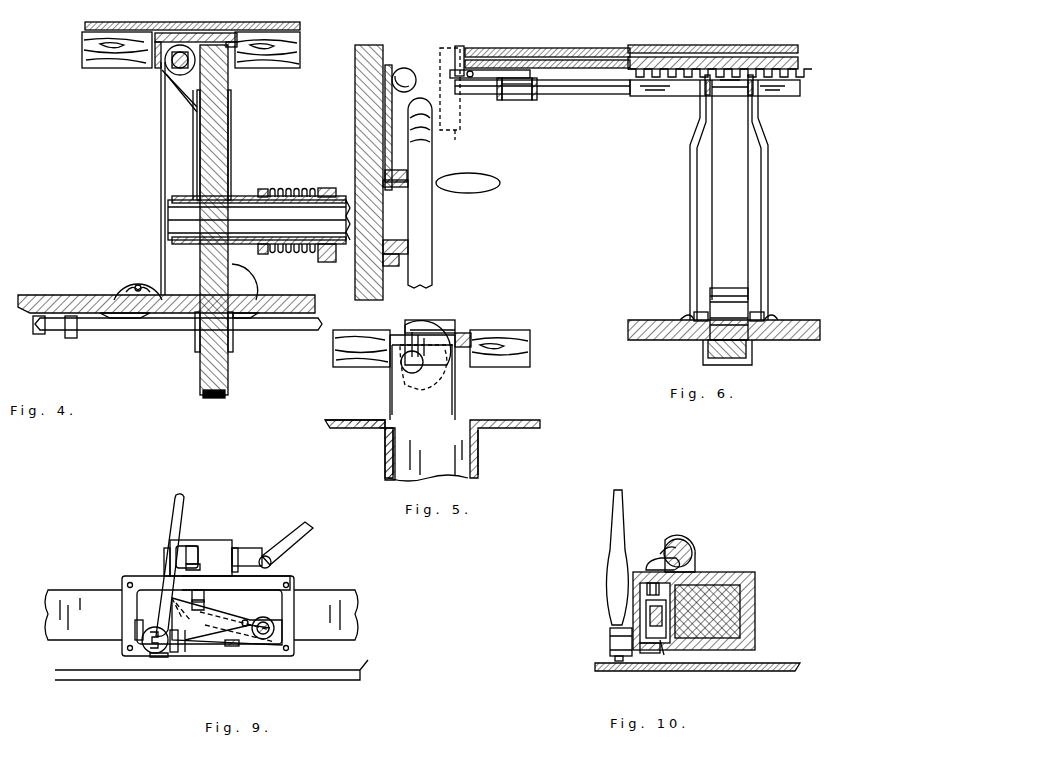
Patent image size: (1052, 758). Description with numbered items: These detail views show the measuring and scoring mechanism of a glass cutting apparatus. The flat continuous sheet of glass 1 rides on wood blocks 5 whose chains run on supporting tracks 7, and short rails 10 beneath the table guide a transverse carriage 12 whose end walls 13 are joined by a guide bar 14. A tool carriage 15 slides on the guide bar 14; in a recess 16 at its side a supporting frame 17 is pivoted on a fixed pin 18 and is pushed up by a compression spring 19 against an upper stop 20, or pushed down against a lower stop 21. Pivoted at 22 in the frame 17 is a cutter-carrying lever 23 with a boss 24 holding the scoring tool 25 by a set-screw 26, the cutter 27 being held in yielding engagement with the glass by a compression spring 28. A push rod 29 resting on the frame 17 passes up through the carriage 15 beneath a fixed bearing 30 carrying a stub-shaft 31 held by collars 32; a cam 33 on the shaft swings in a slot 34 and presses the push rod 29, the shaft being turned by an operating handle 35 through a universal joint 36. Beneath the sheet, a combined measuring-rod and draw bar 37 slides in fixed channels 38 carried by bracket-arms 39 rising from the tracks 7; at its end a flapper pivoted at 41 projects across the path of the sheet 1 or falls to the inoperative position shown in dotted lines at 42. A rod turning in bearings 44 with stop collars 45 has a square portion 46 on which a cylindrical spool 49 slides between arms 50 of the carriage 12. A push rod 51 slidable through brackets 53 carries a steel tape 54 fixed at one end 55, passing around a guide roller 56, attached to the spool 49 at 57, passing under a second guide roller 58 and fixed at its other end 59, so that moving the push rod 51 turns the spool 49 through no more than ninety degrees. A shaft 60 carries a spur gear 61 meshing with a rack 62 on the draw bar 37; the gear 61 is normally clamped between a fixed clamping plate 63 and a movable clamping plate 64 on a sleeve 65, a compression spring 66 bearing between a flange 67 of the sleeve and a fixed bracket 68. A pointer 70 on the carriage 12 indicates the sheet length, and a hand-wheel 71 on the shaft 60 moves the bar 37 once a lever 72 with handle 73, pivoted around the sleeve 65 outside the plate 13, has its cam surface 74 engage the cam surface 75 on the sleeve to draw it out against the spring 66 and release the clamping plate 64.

In FIG. 4, the sheet of glass 1 is at (300, 28).
In FIG. 6, the sheet of glass 1 is at (702, 46).
In FIG. 9, the sheet of glass 1 is at (211, 670).
In FIG. 10, the sheet of glass 1 is at (768, 663).
In FIG. 4, the wood blocks 5 is at (285, 47).
In FIG. 5, the wood blocks 5 is at (506, 345).
In FIG. 5, the supporting tracks 7 is at (372, 420).
In FIG. 9, the rails 10 is at (205, 700).
In FIG. 4, the carriage 12 is at (94, 298).
In FIG. 6, the carriage 12 is at (790, 322).
In FIG. 5, the wall 13 is at (362, 110).
In FIG. 9, the guide bar 14 is at (350, 600).
In FIG. 10, the guide bar 14 is at (700, 600).
In FIG. 9, the tool carriage 15 is at (285, 602).
In FIG. 10, the tool carriage 15 is at (755, 592).
In FIG. 9, the recess 16 is at (262, 592).
In FIG. 10, the recess 16 is at (660, 590).
In FIG. 9, the supporting frame 17 is at (240, 628).
In FIG. 10, the supporting frame 17 is at (662, 655).
In FIG. 9, the fixed pin 18 is at (272, 632).
In FIG. 9, the compression spring 19 is at (230, 646).
In FIG. 9, the stop 20 is at (192, 596).
In FIG. 9, the stop 21 is at (185, 652).
In FIG. 9, the pivot 22 is at (240, 612).
In FIG. 9, the cutter-carrying lever 23 is at (174, 652).
In FIG. 10, the cutter-carrying lever 23 is at (648, 653).
In FIG. 9, the boss 24 is at (143, 645).
In FIG. 10, the boss 24 is at (610, 640).
In FIG. 9, the scoring tool 25 is at (164, 568).
In FIG. 10, the scoring tool 25 is at (617, 590).
In FIG. 9, the set-screw 26 is at (135, 630).
In FIG. 9, the cutter 27 is at (152, 656).
In FIG. 10, the cutter 27 is at (615, 660).
In FIG. 9, the compression spring 28 is at (125, 590).
In FIG. 9, the push rod 29 is at (206, 600).
In FIG. 10, the push rod 29 is at (646, 570).
In FIG. 9, the fixed bearing 30 is at (212, 541).
In FIG. 10, the fixed bearing 30 is at (694, 560).
In FIG. 9, the stub-shaft 31 is at (250, 550).
In FIG. 10, the stub-shaft 31 is at (684, 540).
In FIG. 9, the collars 32 is at (166, 548).
In FIG. 9, the cam 33 is at (192, 546).
In FIG. 10, the cam 33 is at (656, 560).
In FIG. 9, the slot 34 is at (200, 566).
In FIG. 10, the slot 34 is at (666, 552).
In FIG. 9, the operating handle 35 is at (300, 527).
In FIG. 9, the universal joint 36 is at (268, 555).
In FIG. 4, the measuring-rod and draw bar 37 is at (82, 40).
In FIG. 5, the measuring-rod and draw bar 37 is at (456, 342).
In FIG. 6, the measuring-rod and draw bar 37 is at (640, 58).
In FIG. 4, the fixed channels 38 is at (232, 47).
In FIG. 5, the fixed channels 38 is at (466, 345).
In FIG. 5, the bracket-arms 39 is at (468, 390).
In FIG. 5, the pivot 41 is at (467, 74).
In FIG. 5, the inoperative position 42 is at (447, 49).
In FIG. 5, the bearings 44 is at (518, 100).
In FIG. 5, the stop collars 45 is at (498, 100).
In FIG. 4, the square portion 46 is at (180, 70).
In FIG. 6, the square portion 46 is at (782, 92).
In FIG. 4, the cylindrical spool 49 is at (172, 66).
In FIG. 6, the cylindrical spool 49 is at (745, 92).
In FIG. 6, the arms 50 is at (690, 182).
In FIG. 4, the push rod 51 is at (290, 325).
In FIG. 6, the push rod 51 is at (714, 350).
In FIG. 4, the brackets 53 is at (72, 330).
In FIG. 6, the brackets 53 is at (746, 355).
In FIG. 4, the steel tape 54 is at (193, 157).
In FIG. 6, the steel tape 54 is at (726, 222).
In FIG. 4, the tape end 55 is at (108, 318).
In FIG. 4, the guide roller 56 is at (133, 268).
In FIG. 4, the attachment point 57 is at (168, 62).
In FIG. 4, the second guide roller 58 is at (240, 277).
In FIG. 4, the tape end 59 is at (248, 322).
In FIG. 4, the shaft 60 is at (243, 212).
In FIG. 4, the spur gear 61 is at (212, 137).
In FIG. 6, the rack 62 is at (662, 80).
In FIG. 4, the fixed clamping plate 63 is at (206, 330).
In FIG. 4, the movable clamping plate 64 is at (230, 157).
In FIG. 4, the sleeve 65 is at (241, 200).
In FIG. 4, the compression spring 66 is at (292, 192).
In FIG. 4, the flange 67 is at (263, 194).
In FIG. 4, the fixed bracket 68 is at (328, 190).
In FIG. 4, the pointer 70 is at (168, 76).
In FIG. 5, the hand-wheel 71 is at (420, 212).
In FIG. 5, the lever 72 is at (388, 65).
In FIG. 5, the operating handle 73 is at (405, 68).
In FIG. 5, the cam surface 74 is at (398, 178).
In FIG. 5, the cam surface 75 is at (398, 248).